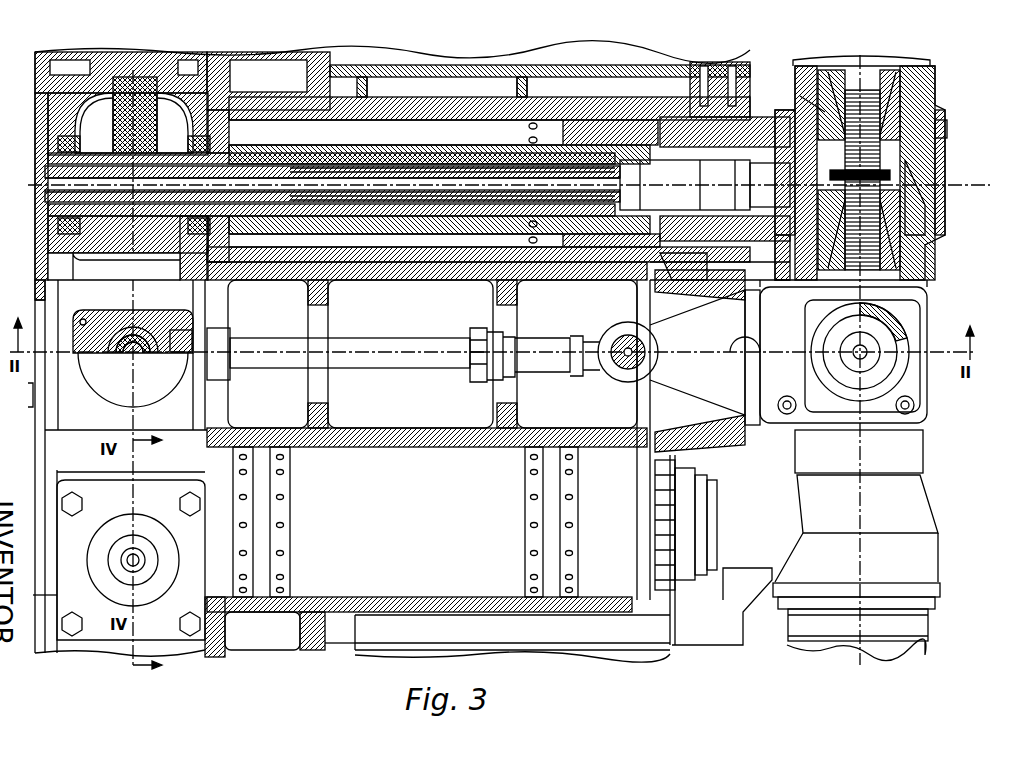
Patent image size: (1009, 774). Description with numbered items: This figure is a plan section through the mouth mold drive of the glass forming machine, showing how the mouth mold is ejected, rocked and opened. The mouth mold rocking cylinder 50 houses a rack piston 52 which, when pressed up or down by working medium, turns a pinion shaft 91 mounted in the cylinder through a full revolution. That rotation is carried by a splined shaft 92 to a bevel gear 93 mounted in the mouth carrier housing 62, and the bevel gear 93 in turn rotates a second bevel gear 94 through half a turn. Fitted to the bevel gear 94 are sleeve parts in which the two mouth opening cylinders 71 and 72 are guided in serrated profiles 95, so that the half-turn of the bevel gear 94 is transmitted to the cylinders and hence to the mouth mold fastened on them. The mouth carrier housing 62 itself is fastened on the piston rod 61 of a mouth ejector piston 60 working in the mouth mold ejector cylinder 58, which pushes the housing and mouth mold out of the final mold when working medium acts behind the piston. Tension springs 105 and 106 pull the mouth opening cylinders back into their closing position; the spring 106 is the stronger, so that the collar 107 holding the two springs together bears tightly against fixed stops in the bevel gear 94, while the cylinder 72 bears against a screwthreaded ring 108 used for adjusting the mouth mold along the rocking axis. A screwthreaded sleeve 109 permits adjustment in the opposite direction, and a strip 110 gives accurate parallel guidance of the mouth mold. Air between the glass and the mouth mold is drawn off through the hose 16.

The hose 16 is at (362, 360).
The mouth mold rocking cylinder 50 is at (42, 75).
The rack piston 52 is at (137, 70).
The mouth mold ejector cylinder 58 is at (378, 270).
The mouth ejector piston 60 is at (290, 272).
The piston rod 61 is at (445, 268).
The mouth carrier housing 62 is at (928, 232).
The mouth opening cylinder 71 is at (905, 268).
The mouth opening cylinder 72 is at (797, 72).
The pinion shaft 91 is at (67, 85).
The splined shaft 92 is at (565, 270).
The bevel gear 93 is at (800, 228).
The bevel gear 94 is at (790, 172).
The serrated profile 95 is at (815, 93).
The tension spring 105 is at (795, 292).
The tension spring 106 is at (865, 120).
The collar 107 is at (920, 178).
The screwthreaded ring 108 is at (940, 118).
The screwthreaded sleeve 109 is at (697, 236).
The strip 110 is at (650, 88).